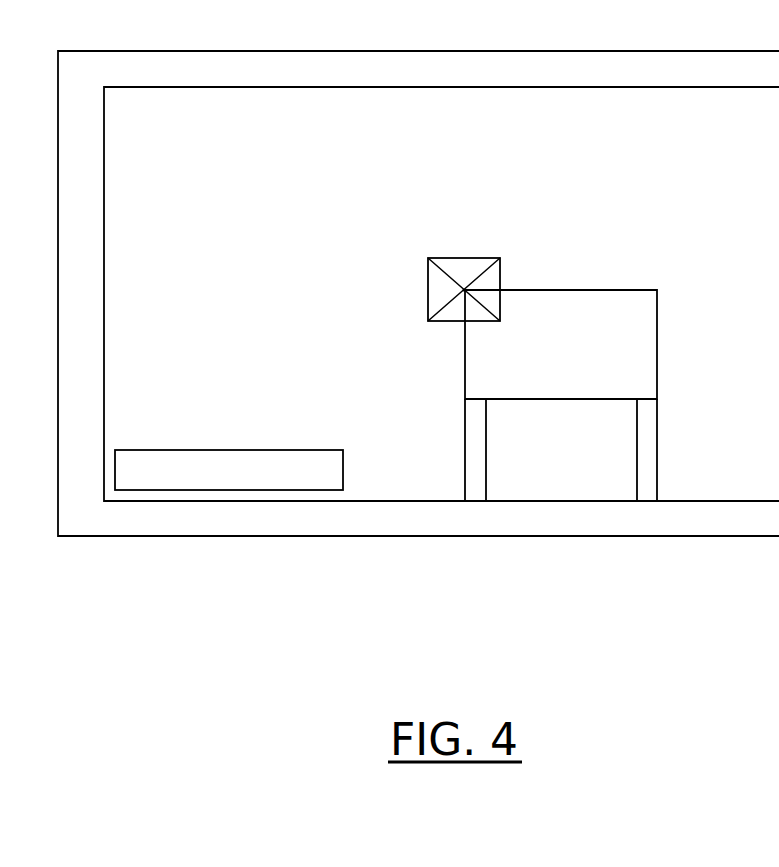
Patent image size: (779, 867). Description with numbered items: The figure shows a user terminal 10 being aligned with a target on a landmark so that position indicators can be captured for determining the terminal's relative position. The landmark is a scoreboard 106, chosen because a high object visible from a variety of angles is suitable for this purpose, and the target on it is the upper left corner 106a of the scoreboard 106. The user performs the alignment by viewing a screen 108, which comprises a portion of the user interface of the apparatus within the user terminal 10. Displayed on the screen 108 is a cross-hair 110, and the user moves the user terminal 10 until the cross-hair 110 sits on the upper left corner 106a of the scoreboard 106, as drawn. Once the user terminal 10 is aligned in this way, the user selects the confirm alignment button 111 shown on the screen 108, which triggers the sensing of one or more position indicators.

The user terminal 10 is at (483, 51).
The screen 108 is at (295, 87).
The scoreboard 106 is at (617, 290).
The upper left corner 106a is at (464, 290).
The cross-hair 110 is at (468, 258).
The confirm alignment button 111 is at (146, 450).